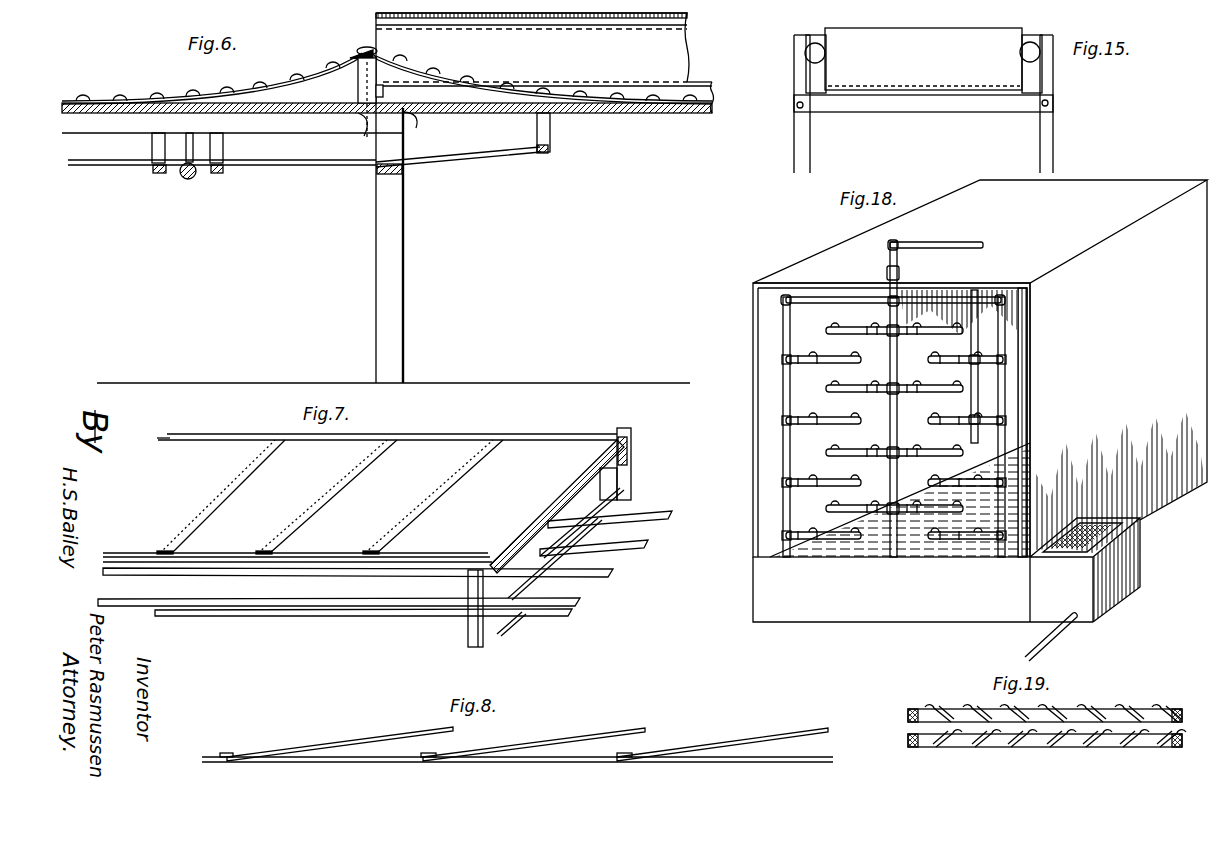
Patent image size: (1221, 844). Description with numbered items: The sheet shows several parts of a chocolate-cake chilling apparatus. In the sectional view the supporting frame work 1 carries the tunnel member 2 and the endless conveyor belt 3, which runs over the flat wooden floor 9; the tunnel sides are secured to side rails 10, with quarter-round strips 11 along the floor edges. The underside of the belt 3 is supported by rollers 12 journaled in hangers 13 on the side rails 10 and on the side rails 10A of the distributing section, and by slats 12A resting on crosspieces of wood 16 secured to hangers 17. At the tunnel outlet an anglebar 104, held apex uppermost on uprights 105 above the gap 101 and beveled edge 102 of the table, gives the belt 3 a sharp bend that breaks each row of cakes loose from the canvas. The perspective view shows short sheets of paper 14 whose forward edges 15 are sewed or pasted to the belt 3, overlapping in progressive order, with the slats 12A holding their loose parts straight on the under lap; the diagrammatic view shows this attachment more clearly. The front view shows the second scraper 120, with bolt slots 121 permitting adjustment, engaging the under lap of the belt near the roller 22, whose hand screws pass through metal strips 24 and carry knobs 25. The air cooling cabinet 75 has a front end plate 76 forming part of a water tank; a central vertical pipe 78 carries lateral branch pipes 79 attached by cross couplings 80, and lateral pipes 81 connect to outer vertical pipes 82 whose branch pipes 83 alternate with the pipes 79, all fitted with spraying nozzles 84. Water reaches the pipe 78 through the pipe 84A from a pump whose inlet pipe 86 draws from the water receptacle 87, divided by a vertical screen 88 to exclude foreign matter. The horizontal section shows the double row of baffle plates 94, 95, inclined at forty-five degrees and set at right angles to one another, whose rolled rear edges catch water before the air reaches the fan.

In FIG. 6, the supporting frame work 1 is at (405, 213).
In FIG. 6, the tunnel member 2 is at (532, 47).
In FIG. 6, the endless conveyor belt 3 is at (277, 84).
In FIG. 7, the endless conveyor belt 3 is at (450, 556).
In FIG. 8, the endless conveyor belt 3 is at (512, 762).
In FIG. 6, the floor 9 is at (645, 108).
In FIG. 7, the floor 9 is at (557, 506).
In FIG. 6, the side rails 10 is at (700, 82).
In FIG. 6, the side rails of the distributing section 10A is at (106, 128).
In FIG. 6, the quarter-round strips 11 is at (392, 93).
In FIG. 6, the rollers 12 is at (186, 178).
In FIG. 6, the slats 12A is at (73, 168).
In FIG. 7, the slats 12A is at (657, 528).
In FIG. 6, the hangers 13 is at (188, 135).
In FIG. 7, the sheets of paper 14 is at (360, 498).
In FIG. 8, the sheets of paper 14 is at (326, 742).
In FIG. 7, the forward edges 15 is at (166, 558).
In FIG. 8, the forward edges 15 is at (230, 752).
In FIG. 6, the crosspieces of wood 16 is at (153, 172).
In FIG. 7, the crosspieces of wood 16 is at (500, 628).
In FIG. 6, the hangers 17 is at (223, 143).
In FIG. 7, the hangers 17 is at (618, 478).
In FIG. 15, the roller 22 is at (923, 59).
In FIG. 15, the metal strips 24 is at (795, 75).
In FIG. 15, the knobs 25 is at (806, 53).
In FIG. 18, the air cooling cabinet 75 is at (980, 401).
In FIG. 18, the end plate 76 is at (923, 589).
In FIG. 18, the vertical pipe 78 is at (898, 407).
In FIG. 18, the lateral branch pipes 79 is at (855, 322).
In FIG. 18, the cross couplings 80 is at (897, 383).
In FIG. 18, the lateral pipes 81 is at (812, 300).
In FIG. 18, the vertical pipes 82 is at (787, 458).
In FIG. 18, the lateral branch pipes 83 is at (833, 421).
In FIG. 18, the spraying nozzles 84 is at (837, 380).
In FIG. 18, the pipe 84A is at (947, 252).
In FIG. 18, the pipe 86 is at (1048, 636).
In FIG. 18, the water receptacle 87 is at (1122, 565).
In FIG. 18, the vertical screen 88 is at (1103, 520).
In FIG. 18, the baffle plates 94 is at (990, 377).
In FIG. 19, the baffle plates 94 is at (1023, 744).
In FIG. 19, the baffle plates 95 is at (1123, 704).
In FIG. 6, the gap 101 is at (348, 130).
In FIG. 6, the beveled edge 102 is at (408, 128).
In FIG. 6, the anglebar 104 is at (377, 52).
In FIG. 6, the uprights 105 is at (358, 88).
In FIG. 15, the second scraper 120 is at (925, 103).
In FIG. 15, the bolt slots 121 is at (797, 101).